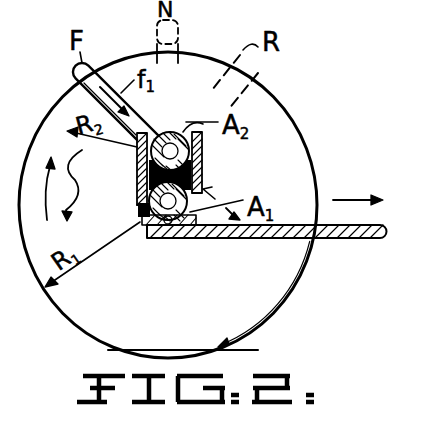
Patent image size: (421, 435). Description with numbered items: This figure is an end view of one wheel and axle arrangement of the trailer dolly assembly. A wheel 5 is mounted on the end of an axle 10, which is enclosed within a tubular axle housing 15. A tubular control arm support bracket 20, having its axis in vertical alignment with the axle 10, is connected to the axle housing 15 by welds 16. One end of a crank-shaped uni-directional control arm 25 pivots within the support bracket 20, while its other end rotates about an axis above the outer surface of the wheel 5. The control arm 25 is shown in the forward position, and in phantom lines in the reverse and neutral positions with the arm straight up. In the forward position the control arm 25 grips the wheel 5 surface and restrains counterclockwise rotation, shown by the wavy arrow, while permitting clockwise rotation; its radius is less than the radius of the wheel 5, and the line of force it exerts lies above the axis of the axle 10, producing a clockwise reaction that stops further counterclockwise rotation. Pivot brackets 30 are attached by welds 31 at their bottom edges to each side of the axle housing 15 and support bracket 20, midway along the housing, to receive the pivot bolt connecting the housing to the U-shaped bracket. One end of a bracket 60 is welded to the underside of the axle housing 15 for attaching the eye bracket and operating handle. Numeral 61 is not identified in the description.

The wheel 5 is at (283, 306).
The axle 10 is at (170, 243).
The tubular axle housing 15 is at (150, 218).
The welds 16 is at (202, 160).
The tubular control arm support bracket 20 is at (173, 132).
The uni-directional control arm 25 is at (71, 70).
The pivot bracket 30 is at (137, 172).
The welds 31 is at (148, 210).
The bracket 60 is at (336, 240).
The guide shoe 61 is at (141, 242).